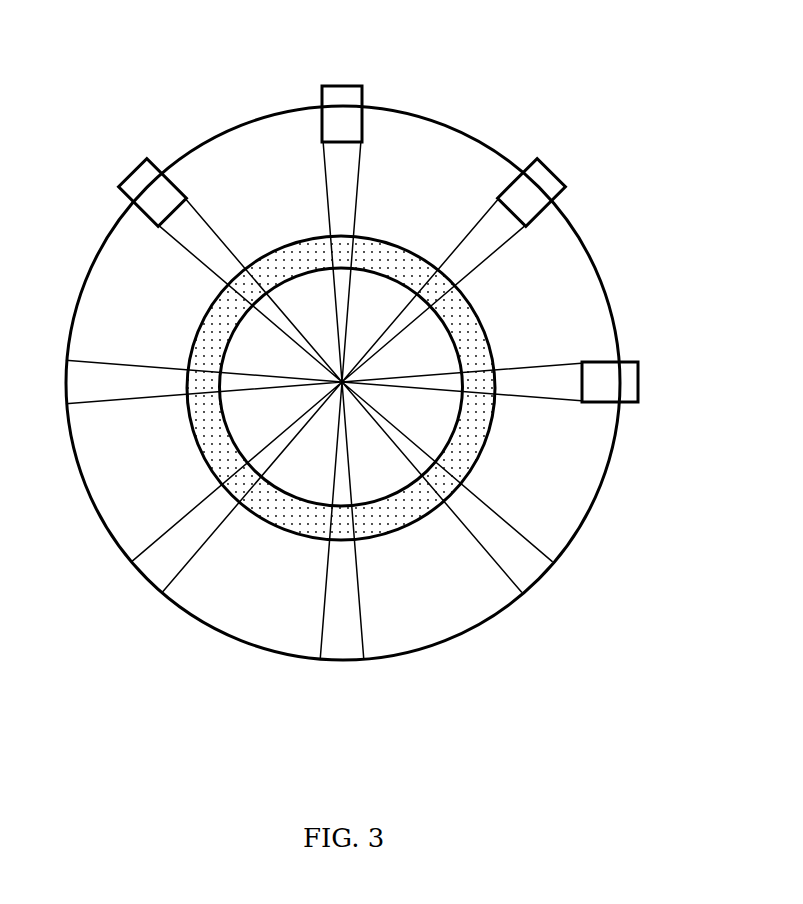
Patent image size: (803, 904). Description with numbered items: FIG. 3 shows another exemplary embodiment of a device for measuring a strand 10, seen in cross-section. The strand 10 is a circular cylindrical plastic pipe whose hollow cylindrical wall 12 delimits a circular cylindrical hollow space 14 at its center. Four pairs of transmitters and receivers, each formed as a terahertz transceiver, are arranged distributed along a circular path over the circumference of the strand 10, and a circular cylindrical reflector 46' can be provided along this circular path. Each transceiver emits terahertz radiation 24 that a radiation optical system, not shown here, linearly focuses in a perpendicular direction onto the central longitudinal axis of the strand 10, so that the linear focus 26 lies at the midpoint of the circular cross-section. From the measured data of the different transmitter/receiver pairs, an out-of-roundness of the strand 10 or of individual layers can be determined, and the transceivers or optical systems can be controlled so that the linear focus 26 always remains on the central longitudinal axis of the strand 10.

The strand 10 is at (371, 405).
The wall 12 is at (468, 338).
The hollow space 14 is at (248, 415).
The terahertz radiation 24 is at (123, 361).
The linear focus 26 is at (349, 405).
The circular cylindrical reflector 46' is at (343, 446).